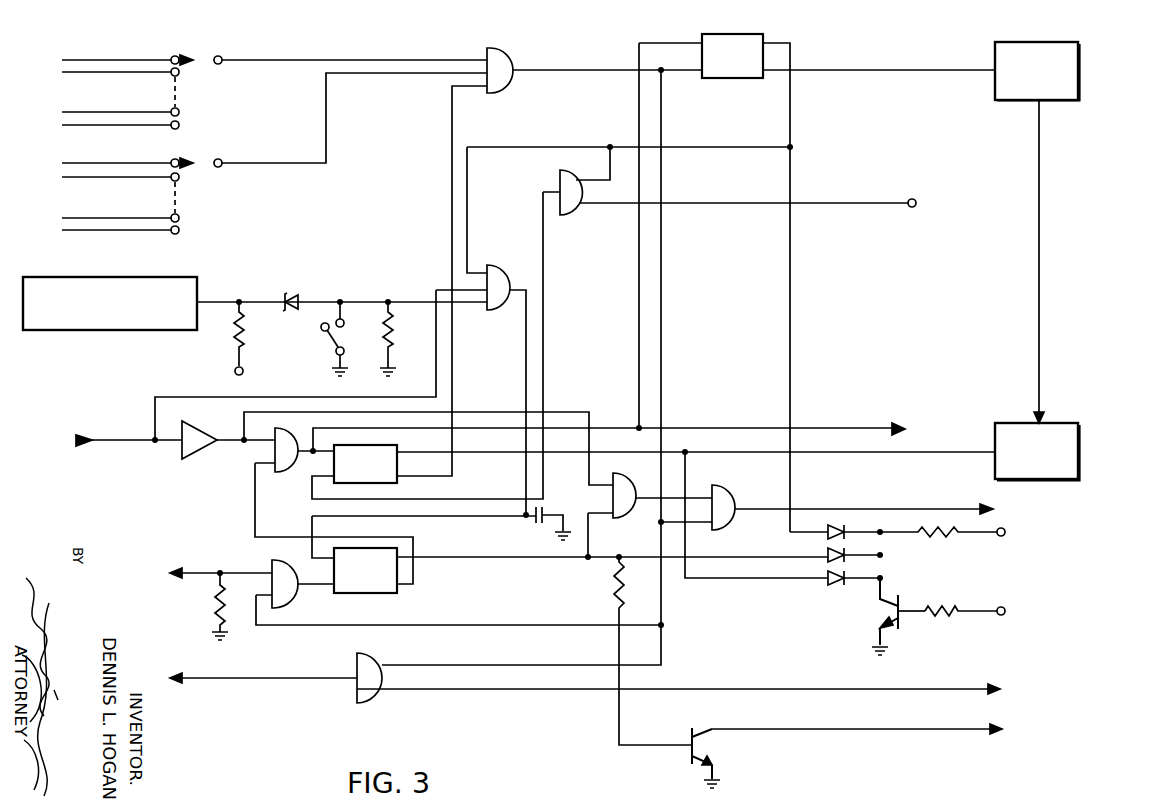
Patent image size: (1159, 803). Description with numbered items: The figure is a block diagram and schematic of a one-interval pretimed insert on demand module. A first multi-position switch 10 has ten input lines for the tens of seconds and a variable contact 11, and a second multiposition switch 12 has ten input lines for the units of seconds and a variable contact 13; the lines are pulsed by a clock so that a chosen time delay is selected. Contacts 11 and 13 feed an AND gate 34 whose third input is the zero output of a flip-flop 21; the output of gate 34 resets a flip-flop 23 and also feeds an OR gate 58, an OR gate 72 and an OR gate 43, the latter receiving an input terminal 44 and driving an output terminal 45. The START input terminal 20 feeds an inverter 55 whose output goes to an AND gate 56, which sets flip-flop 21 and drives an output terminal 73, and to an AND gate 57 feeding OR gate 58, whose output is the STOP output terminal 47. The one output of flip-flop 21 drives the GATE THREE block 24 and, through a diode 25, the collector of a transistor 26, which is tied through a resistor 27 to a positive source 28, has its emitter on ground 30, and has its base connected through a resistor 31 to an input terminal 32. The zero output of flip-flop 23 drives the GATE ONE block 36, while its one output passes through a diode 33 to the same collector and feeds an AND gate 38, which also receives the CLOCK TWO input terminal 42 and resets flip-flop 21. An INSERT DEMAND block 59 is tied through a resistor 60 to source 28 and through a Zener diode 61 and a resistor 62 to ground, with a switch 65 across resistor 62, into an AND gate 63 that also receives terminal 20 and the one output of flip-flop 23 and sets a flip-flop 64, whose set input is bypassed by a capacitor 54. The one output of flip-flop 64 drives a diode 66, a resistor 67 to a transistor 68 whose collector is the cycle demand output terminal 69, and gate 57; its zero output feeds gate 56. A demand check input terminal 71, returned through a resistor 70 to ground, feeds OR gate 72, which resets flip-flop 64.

The first multi-position switch 10 is at (216, 99).
The variable contact 11 is at (204, 62).
The second multiposition switch 12 is at (216, 207).
The variable contact 13 is at (204, 165).
The input terminal 20 is at (86, 441).
The flip-flop 21 is at (372, 474).
The flip-flop 23 is at (741, 64).
The block labeled GATE 3 24 is at (1009, 420).
The diode 25 is at (826, 578).
The transistor 26 is at (880, 622).
The resistor 27 is at (938, 538).
The source of positive energizing potential 28 is at (235, 367).
The ground 30 is at (346, 366).
The resistor 31 is at (961, 599).
The input terminal 32 is at (1004, 607).
The diode 33 is at (838, 524).
The AND gate 34 is at (510, 58).
The block labeled GATE 1 36 is at (1027, 43).
The AND gate 38 is at (562, 177).
The input terminal 42 is at (912, 199).
The OR gate 43 is at (361, 665).
The input terminal 44 is at (991, 684).
The output terminal 45 is at (174, 679).
The output terminal 47 is at (992, 510).
The capacitor 54 is at (541, 512).
The inverter 55 is at (213, 431).
The AND gate 56 is at (276, 433).
The AND gate 57 is at (633, 483).
The OR gate 58 is at (738, 502).
The block labeled INSERT DEMAND 59 is at (176, 277).
The resistor 60 is at (225, 334).
The Zener diode 61 is at (293, 293).
The resistor 62 is at (393, 326).
The AND gate 63 is at (503, 273).
The flip-flop 64 is at (374, 579).
The switch 65 is at (341, 338).
The diode 66 is at (826, 555).
The resistor 67 is at (617, 594).
The transistor 68 is at (735, 755).
The cycle demand output terminal 69 is at (995, 734).
The resistor 70 is at (226, 598).
The demand check input terminal 71 is at (181, 576).
The OR gate 72 is at (296, 571).
The output terminal 73 is at (902, 426).